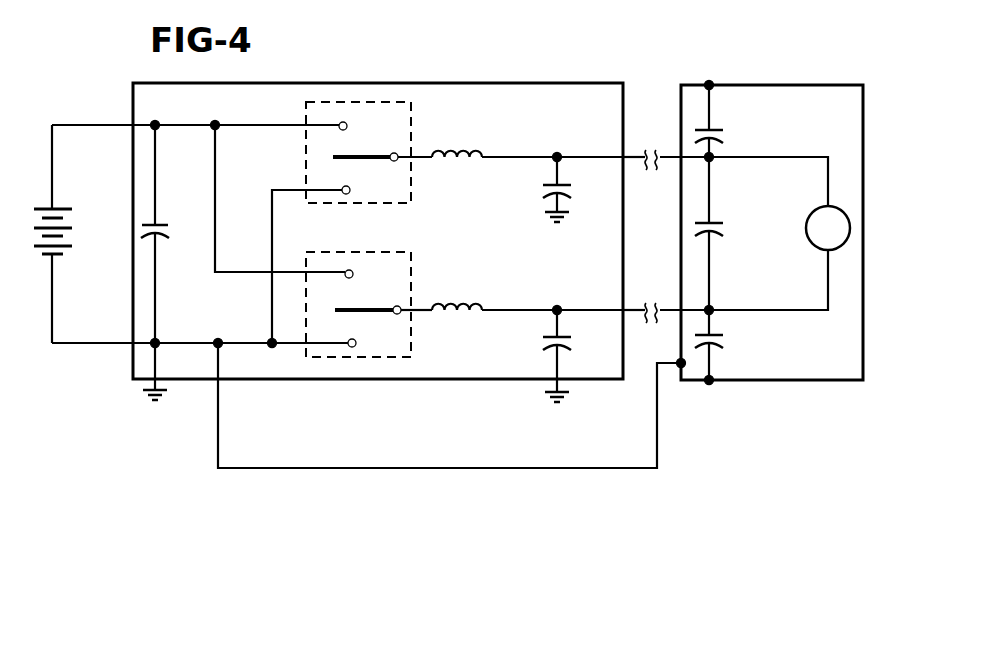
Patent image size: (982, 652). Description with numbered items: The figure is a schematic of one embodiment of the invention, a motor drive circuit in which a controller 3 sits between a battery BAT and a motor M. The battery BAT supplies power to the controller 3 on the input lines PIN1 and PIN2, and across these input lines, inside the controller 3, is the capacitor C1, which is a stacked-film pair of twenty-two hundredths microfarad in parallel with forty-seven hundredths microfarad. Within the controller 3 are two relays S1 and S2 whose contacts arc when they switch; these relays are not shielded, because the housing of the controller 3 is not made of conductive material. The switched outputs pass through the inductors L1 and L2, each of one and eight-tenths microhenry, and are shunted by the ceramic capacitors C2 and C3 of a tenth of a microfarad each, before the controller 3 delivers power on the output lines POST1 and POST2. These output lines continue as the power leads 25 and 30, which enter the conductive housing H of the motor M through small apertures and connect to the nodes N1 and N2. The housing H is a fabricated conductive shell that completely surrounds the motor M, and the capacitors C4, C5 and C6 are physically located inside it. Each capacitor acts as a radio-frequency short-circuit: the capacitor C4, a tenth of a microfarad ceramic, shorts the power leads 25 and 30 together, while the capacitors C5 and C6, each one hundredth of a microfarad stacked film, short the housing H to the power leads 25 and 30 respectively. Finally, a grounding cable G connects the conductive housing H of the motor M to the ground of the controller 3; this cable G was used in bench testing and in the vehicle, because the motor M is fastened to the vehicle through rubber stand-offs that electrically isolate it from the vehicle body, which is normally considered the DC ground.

The controller 3 is at (388, 82).
The power lead 25 is at (772, 157).
The power lead 30 is at (786, 312).
The conductive housing H is at (770, 381).
The grounding cable G is at (436, 468).
The motor M is at (828, 228).
The battery BAT is at (77, 234).
The capacitor C1 is at (172, 262).
The capacitor C2 is at (575, 188).
The capacitor C3 is at (575, 354).
The capacitor C4 is at (725, 233).
The capacitor C5 is at (724, 121).
The capacitor C6 is at (724, 345).
The relay S1 is at (369, 152).
The relay S2 is at (369, 304).
The inductor L1 is at (457, 138).
The inductor L2 is at (457, 292).
The node N1 is at (765, 192).
The node N2 is at (761, 276).
The line Pin1 PIN1 is at (103, 124).
The line Pin2 PIN2 is at (88, 345).
The line Pout1 POST1 is at (634, 146).
The line Pout2 POST2 is at (639, 329).